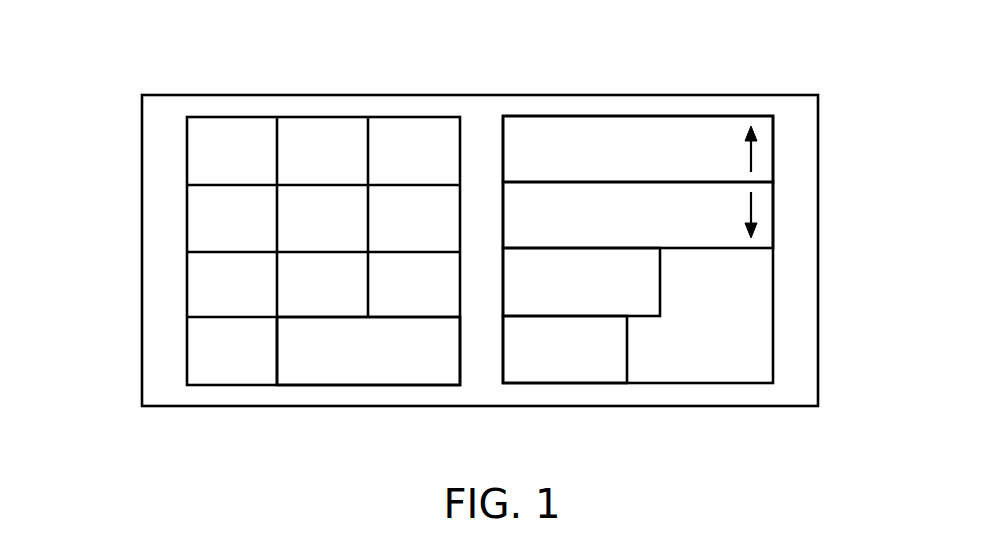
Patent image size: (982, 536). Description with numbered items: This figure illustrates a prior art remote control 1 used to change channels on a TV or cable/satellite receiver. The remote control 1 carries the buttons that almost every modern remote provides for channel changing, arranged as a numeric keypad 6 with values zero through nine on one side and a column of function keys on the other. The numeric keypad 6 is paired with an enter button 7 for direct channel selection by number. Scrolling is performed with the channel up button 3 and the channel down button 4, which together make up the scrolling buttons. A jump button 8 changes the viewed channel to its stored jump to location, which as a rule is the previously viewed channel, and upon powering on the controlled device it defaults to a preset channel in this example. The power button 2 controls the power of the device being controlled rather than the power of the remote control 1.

The remote control 1 is at (130, 228).
The 1/0 power button 2 is at (627, 337).
The channel up button 3 is at (773, 135).
The channel down button 4 is at (773, 212).
The numeric keypad 6 is at (313, 118).
The enter button 7 is at (322, 386).
The jump button 8 is at (660, 268).